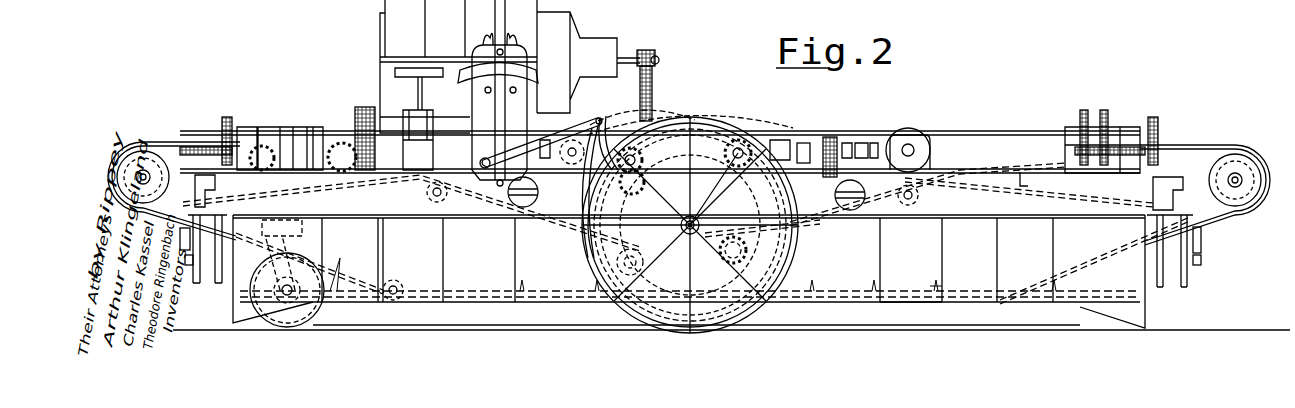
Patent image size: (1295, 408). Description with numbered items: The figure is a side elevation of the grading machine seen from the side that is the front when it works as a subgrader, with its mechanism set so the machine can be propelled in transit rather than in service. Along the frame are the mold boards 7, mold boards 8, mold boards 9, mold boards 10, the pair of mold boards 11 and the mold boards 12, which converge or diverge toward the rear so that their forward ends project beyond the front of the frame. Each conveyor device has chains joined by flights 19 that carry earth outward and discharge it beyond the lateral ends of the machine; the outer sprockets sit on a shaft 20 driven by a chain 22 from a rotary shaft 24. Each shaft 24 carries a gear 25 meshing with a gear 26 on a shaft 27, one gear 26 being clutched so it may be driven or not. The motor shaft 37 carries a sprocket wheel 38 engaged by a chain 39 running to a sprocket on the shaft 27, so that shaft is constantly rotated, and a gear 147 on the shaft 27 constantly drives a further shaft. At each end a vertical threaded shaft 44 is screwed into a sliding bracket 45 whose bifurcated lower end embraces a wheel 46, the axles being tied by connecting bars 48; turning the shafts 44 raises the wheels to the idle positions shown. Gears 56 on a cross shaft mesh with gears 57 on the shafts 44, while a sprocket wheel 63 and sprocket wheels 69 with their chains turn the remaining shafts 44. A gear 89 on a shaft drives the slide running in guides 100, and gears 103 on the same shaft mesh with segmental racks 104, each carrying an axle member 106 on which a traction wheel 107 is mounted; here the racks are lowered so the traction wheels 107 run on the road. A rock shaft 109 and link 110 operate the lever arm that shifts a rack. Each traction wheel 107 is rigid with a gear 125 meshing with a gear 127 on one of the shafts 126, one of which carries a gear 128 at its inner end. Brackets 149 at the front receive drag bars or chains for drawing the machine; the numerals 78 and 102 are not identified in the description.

The mold boards 7 is at (1106, 304).
The mold boards 8 is at (1037, 296).
The mold boards 9 is at (975, 292).
The mold boards 10 is at (917, 292).
The mold boards 11 is at (855, 292).
The mold boards 12 is at (505, 46).
The flights 19 is at (943, 280).
The shaft 20 is at (1236, 178).
The chain 22 is at (1212, 145).
The rotary shaft 24 is at (912, 145).
The gear 25 is at (925, 150).
The gear 26 is at (895, 132).
The shaft 27 is at (805, 143).
The motor shaft 37 is at (628, 57).
The sprocket wheel 38 is at (652, 50).
The chain 39 is at (654, 86).
The vertical threaded shaft 44 is at (1125, 192).
The brackets 45 is at (1200, 256).
The wheels 46 is at (1180, 280).
The connecting bars 48 is at (1201, 236).
The gears 56 is at (1156, 117).
The gears 57 is at (1175, 147).
The sprocket wheel 63 is at (1108, 110).
The sprocket wheels 69 is at (1083, 110).
The pivot bracket 78 is at (535, 143).
The gear 89 is at (626, 120).
The guides 100 is at (320, 140).
The drive wheel 102 is at (310, 313).
The gears 103 is at (618, 190).
The segmental racks 104 is at (727, 250).
The axle member 106 is at (688, 240).
The traction wheel 107 is at (632, 300).
The rock shaft 109 is at (497, 202).
The link 110 is at (562, 122).
The gear 125 is at (757, 193).
The shafts 126 is at (673, 157).
The gears 127 is at (745, 143).
The gear 128 is at (780, 123).
The gear 147 is at (832, 135).
The brackets 149 is at (527, 208).